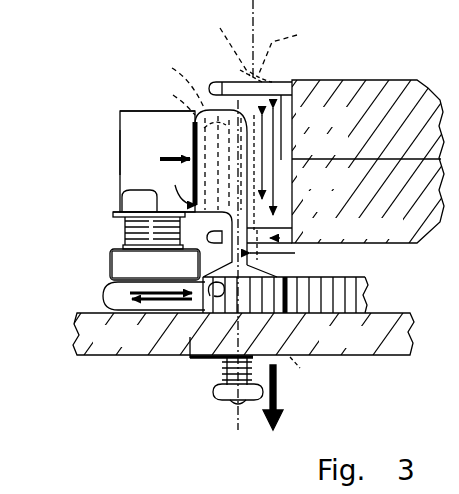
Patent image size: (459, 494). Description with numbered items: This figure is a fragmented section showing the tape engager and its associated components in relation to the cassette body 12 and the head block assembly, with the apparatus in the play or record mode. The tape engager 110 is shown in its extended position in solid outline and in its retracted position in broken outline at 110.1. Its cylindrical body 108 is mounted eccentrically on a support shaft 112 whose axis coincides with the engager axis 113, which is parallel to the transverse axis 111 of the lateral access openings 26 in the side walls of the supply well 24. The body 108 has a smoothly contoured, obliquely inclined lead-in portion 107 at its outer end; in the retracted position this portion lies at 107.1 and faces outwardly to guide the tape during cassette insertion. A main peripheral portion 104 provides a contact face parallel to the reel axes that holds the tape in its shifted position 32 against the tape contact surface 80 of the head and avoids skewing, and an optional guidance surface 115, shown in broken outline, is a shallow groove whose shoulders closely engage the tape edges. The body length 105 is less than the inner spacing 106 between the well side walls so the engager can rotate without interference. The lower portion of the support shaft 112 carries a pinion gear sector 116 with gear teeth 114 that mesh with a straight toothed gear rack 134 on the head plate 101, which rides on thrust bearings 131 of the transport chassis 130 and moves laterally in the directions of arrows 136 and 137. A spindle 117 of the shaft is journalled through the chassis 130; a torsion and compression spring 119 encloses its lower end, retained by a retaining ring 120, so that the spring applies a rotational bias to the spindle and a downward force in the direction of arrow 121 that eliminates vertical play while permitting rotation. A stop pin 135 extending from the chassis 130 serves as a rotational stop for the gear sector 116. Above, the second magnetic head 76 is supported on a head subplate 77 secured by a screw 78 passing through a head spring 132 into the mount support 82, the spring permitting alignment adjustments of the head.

The cassette body 12 is at (409, 72).
The supply well 24 is at (281, 98).
The lateral access openings 26 is at (239, 215).
The shifted tape position 32 is at (120, 152).
The second magnetic head 76 is at (120, 166).
The head subplate 77 is at (130, 203).
The screw 78 is at (132, 162).
The tape contact surface 80 is at (173, 95).
The mount support 82 is at (117, 235).
The head plate 101 is at (113, 295).
The main peripheral portion 104 is at (169, 185).
The body length 105 is at (290, 155).
The inner spacing 106 is at (281, 190).
The lead-in portion 107 is at (290, 117).
The lead-in portion in retracted position 107.1 is at (172, 68).
The cylindrical body 108 is at (160, 111).
The tape engager 110 is at (211, 110).
The tape engager in retracted position 110.1 is at (288, 36).
The transverse axis 111 is at (260, 14).
The support shaft 112 is at (292, 236).
The engager axis 113 is at (230, 68).
The gear teeth 114 is at (286, 280).
The guidance surface 115 is at (174, 132).
The pinion gear sector 116 is at (272, 326).
The spindle 117 is at (312, 369).
The torsion and compression spring 119 is at (216, 370).
The retaining ring 120 is at (211, 389).
The downward bias arrow 121 is at (287, 392).
The transport chassis 130 is at (396, 365).
The thrust bearings 131 is at (105, 312).
The head spring 132 is at (115, 213).
The gear rack 134 is at (340, 293).
The stop pin 135 is at (213, 295).
The head plate extension direction 136 is at (146, 282).
The head plate retraction direction 137 is at (124, 256).